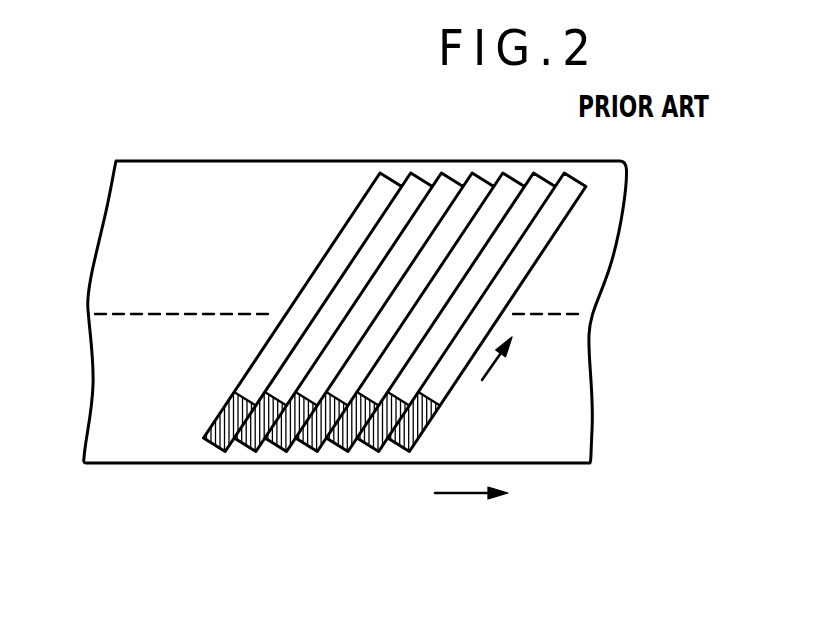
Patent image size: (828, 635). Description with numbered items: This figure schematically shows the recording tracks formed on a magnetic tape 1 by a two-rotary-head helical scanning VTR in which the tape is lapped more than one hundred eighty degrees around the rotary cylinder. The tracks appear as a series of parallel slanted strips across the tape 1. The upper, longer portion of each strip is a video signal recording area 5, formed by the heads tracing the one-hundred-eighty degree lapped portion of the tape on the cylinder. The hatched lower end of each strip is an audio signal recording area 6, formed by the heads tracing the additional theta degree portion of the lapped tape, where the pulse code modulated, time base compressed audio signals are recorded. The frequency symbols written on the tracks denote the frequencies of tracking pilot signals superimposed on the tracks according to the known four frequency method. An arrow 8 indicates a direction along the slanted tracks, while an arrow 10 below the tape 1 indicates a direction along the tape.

The magnetic tape 1 is at (297, 160).
The video signal recording areas 5 is at (330, 268).
The audio signal recording areas 6 is at (223, 428).
The direction arrow 8 is at (490, 368).
The feed direction arrow 10 is at (455, 493).